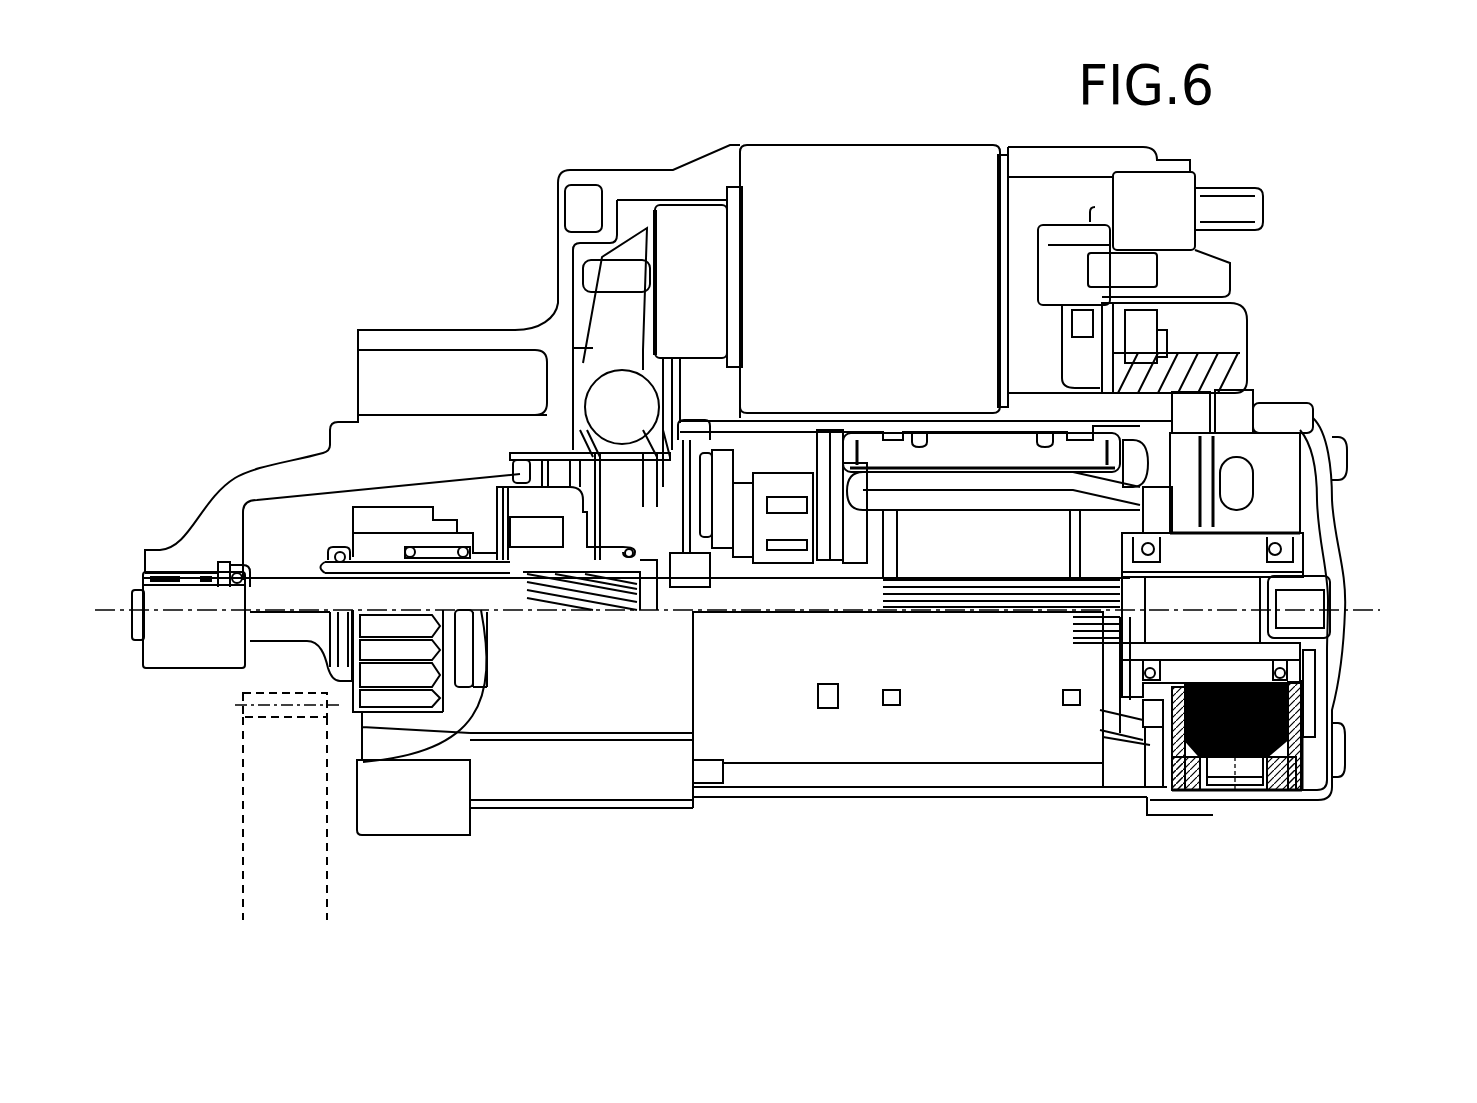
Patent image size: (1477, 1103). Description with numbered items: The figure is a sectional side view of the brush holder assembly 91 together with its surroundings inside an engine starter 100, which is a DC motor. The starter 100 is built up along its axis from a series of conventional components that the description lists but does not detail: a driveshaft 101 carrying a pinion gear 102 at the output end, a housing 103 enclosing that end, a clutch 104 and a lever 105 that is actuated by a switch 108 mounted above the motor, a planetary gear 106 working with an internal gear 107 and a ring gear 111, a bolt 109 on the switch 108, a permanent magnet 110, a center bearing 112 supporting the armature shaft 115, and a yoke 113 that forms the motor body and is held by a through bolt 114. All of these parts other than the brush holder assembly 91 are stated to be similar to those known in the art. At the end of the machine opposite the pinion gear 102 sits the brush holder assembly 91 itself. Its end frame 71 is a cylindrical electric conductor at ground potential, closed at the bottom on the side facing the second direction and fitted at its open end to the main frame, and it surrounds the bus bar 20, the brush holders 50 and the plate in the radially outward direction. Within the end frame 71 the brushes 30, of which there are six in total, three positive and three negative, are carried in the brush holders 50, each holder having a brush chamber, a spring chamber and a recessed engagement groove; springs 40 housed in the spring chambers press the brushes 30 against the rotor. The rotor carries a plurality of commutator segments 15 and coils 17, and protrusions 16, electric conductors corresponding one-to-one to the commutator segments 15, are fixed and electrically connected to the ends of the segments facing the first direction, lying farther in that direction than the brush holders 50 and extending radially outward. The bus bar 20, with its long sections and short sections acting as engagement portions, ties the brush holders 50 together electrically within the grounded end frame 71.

The engine starter 100 is at (230, 109).
The driveshaft 101 is at (283, 600).
The pinion gear 102 is at (375, 528).
The housing 103 is at (380, 443).
The clutch 104 is at (537, 520).
The lever 105 is at (610, 355).
The planetary gear 106 is at (790, 485).
The internal gear 107 is at (805, 445).
The switch 108 is at (900, 172).
The bolt 109 is at (1215, 211).
The permanent magnet 110 is at (1093, 443).
The ring gear 111 is at (275, 787).
The center bearing 112 is at (697, 555).
The yoke 113 is at (777, 730).
The through bolt 114 is at (893, 760).
The armature shaft 115 is at (988, 600).
The end frame 71 is at (1287, 423).
The brush holder assembly 91 is at (1392, 460).
The commutator segments 15 is at (1217, 568).
The protrusions 16 is at (1168, 760).
The coils 17 is at (1132, 733).
The bus bar 20 is at (1235, 785).
The brushes 30 is at (1296, 710).
The springs 40 is at (1286, 797).
The brush holders 50 is at (1300, 778).